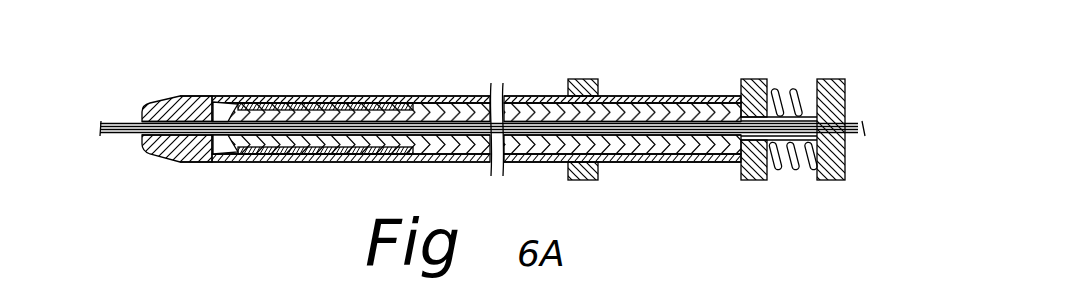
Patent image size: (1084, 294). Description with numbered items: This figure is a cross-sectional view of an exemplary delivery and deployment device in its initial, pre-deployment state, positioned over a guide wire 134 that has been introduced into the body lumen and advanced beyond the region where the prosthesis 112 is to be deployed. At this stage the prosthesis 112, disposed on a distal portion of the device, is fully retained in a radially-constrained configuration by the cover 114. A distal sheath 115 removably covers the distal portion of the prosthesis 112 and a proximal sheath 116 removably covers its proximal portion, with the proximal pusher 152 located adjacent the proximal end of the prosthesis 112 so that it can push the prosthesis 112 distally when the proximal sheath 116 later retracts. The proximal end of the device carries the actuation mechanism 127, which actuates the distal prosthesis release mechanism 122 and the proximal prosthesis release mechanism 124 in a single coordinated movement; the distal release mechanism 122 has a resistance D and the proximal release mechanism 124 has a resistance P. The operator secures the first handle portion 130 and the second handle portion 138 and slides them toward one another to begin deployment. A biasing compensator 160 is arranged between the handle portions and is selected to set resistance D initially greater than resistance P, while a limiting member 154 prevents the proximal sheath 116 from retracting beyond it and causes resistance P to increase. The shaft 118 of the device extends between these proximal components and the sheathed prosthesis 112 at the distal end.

The prosthesis 112 is at (240, 163).
The cover 114 is at (257, 95).
The distal sheath 115 is at (235, 95).
The proximal sheath 116 is at (333, 163).
The catheter shaft 118 is at (302, 290).
The distal prosthesis release mechanism 122 is at (830, 72).
The proximal prosthesis release mechanism 124 is at (576, 70).
The actuation mechanism 127 is at (718, 166).
The first handle portion 130 is at (845, 79).
The guide wire 134 is at (124, 134).
The second handle portion 138 is at (592, 79).
The proximal pusher 152 is at (420, 96).
The limiting member 154 is at (752, 79).
The biasing compensator 160 is at (804, 174).